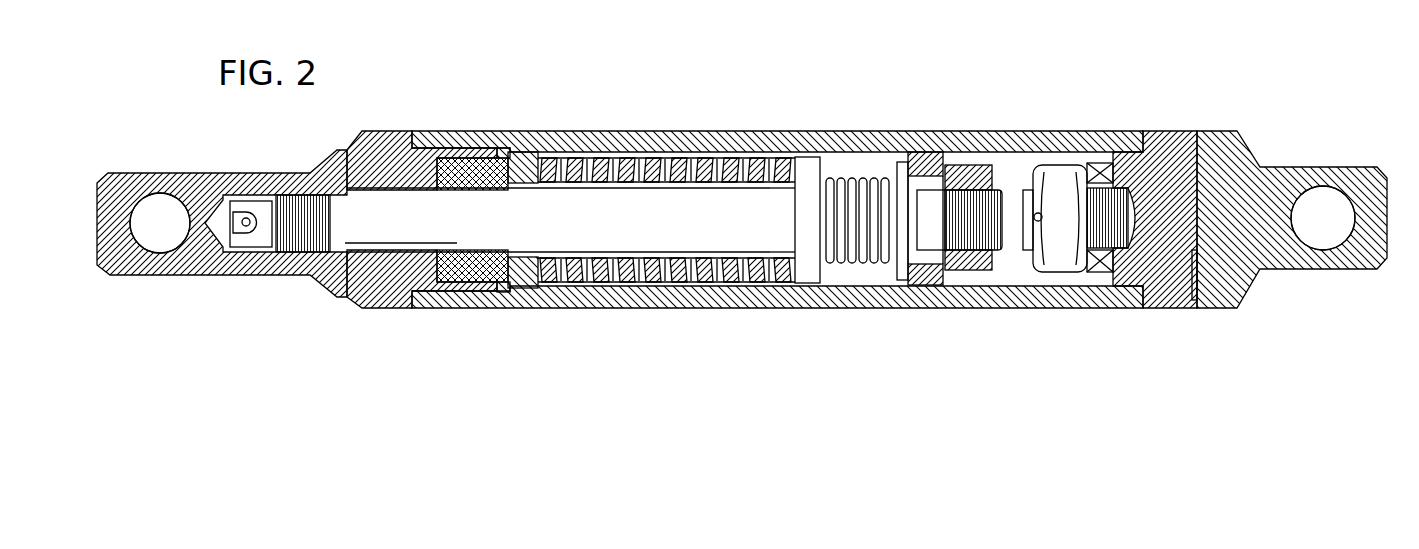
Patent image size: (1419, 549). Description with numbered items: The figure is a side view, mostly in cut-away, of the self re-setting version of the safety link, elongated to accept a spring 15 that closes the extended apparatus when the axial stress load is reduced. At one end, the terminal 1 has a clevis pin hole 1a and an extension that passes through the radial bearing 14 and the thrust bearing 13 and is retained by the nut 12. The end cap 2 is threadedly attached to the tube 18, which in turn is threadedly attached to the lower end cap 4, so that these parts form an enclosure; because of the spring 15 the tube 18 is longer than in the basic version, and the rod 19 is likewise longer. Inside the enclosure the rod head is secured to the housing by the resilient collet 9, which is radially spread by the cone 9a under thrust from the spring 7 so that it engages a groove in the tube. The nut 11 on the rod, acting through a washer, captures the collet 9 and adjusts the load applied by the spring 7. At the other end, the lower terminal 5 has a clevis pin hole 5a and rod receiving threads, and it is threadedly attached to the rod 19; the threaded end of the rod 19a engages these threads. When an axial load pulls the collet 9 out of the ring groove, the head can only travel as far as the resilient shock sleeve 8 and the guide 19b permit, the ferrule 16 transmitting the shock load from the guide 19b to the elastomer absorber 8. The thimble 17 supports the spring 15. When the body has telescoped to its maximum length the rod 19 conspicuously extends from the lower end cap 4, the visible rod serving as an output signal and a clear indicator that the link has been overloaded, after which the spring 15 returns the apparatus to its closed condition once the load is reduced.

The terminal 1 is at (1355, 167).
The clevis pin hole 1a is at (1317, 190).
The end cap 2 is at (1163, 131).
The lower end cap 4 is at (382, 131).
The lower terminal 5 is at (323, 158).
The clevis pin hole 5a is at (161, 198).
The spring 7 is at (852, 258).
The resilient shock sleeve 8 is at (470, 282).
The resilient collet 9 is at (920, 285).
The cone 9a is at (900, 272).
The nut 11 is at (967, 170).
The nut 12 is at (1055, 257).
The thrust bearing 13 is at (1102, 273).
The radial bearing 14 is at (1193, 297).
The spring 15 is at (790, 157).
The ferrule 16 is at (616, 170).
The thimble 17 is at (527, 152).
The tube 18 is at (890, 131).
The rod 19 is at (682, 193).
The threaded rod end 19a is at (295, 263).
The guide 19b is at (772, 305).